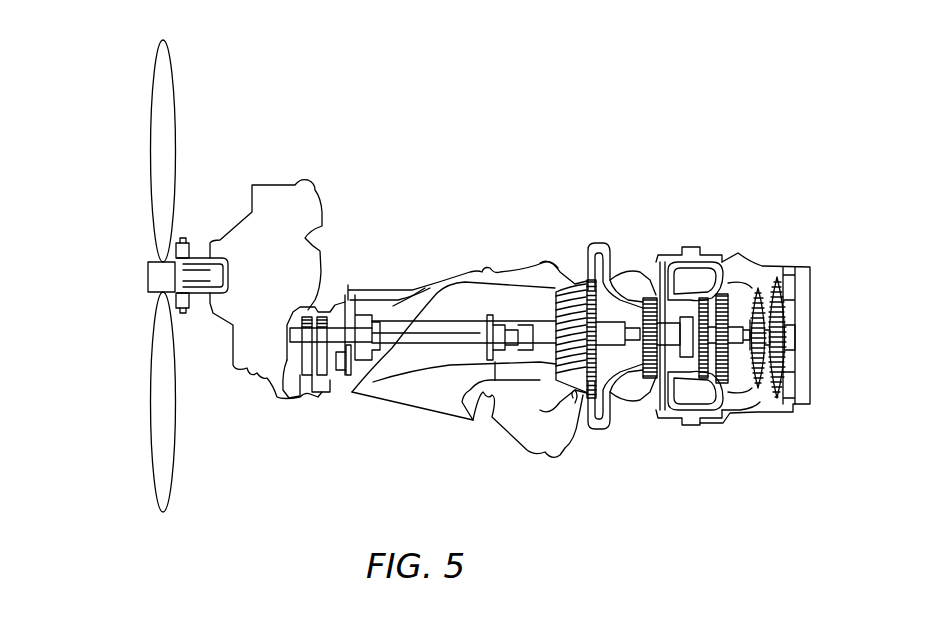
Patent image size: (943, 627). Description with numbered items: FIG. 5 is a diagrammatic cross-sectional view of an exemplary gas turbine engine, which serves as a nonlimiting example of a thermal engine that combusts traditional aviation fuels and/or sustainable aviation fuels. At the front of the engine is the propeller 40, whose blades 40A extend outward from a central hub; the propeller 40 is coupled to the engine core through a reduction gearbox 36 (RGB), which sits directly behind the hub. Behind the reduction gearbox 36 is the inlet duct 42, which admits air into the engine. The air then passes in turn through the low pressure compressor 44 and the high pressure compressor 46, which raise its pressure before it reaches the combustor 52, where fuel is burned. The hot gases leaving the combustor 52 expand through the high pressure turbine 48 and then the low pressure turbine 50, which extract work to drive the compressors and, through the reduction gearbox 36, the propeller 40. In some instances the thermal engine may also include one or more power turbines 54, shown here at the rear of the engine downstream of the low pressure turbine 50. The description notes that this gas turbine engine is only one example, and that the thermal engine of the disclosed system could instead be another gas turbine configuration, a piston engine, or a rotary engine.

The reduction gearbox 36 is at (266, 397).
The propeller 40 is at (108, 296).
The propeller blades 40A is at (150, 118).
The inlet duct 42 is at (415, 410).
The low pressure compressor 44 is at (546, 275).
The high pressure compressor 46 is at (640, 290).
The high pressure turbine 48 is at (692, 298).
The low pressure turbine 50 is at (735, 272).
The combustor 52 is at (705, 402).
The power turbine 54 is at (763, 273).